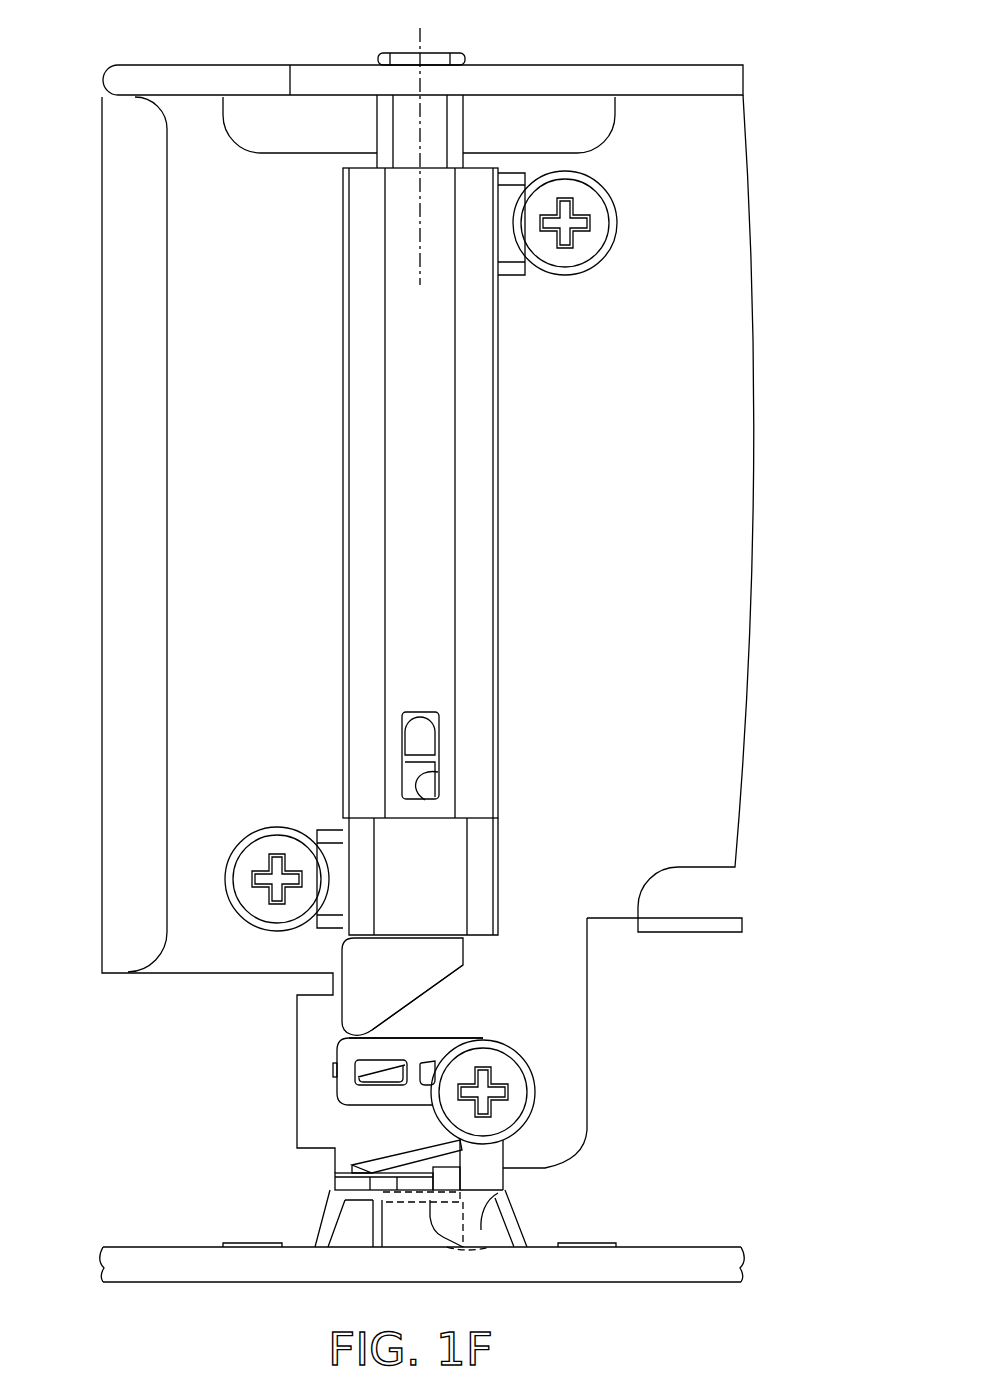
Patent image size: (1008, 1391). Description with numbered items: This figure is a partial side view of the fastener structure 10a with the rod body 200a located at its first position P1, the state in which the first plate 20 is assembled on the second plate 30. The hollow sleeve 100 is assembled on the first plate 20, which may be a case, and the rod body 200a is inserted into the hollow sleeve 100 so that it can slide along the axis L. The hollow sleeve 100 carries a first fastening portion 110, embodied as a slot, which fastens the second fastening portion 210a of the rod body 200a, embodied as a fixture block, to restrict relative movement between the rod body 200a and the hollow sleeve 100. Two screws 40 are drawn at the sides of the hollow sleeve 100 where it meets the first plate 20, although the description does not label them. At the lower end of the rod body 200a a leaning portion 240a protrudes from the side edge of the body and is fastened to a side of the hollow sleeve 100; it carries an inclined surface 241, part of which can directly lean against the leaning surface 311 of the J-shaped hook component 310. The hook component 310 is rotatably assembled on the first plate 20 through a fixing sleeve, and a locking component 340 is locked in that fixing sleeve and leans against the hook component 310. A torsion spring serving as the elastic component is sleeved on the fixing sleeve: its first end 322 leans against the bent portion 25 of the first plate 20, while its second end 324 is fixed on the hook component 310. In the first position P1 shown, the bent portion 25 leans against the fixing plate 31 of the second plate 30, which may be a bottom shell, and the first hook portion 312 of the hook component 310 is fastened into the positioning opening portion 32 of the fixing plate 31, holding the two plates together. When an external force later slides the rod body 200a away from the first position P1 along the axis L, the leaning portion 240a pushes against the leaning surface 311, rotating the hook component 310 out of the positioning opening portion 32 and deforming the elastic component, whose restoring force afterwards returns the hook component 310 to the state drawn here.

The axis L is at (418, 142).
The fastener structure 10a is at (333, 450).
The first plate 20 is at (673, 100).
The bent portion 25 is at (357, 1183).
The second plate 30 is at (692, 1255).
The fixing plate 31 is at (322, 1228).
The positioning opening portion 32 is at (420, 1200).
The screw 40 is at (590, 245).
The hollow sleeve 100 is at (468, 524).
The first fastening portion 110 is at (425, 800).
The rod body 200a is at (395, 123).
The second fastening portion 210a is at (432, 741).
The leaning portion 240a is at (400, 963).
The inclined surface 241 is at (437, 985).
The hook component 310 is at (538, 1077).
The leaning surface 311 is at (418, 1038).
The first hook portion 312 is at (503, 1190).
The first end 322 is at (370, 1162).
The second end 324 is at (333, 1073).
The locking component 340 is at (507, 1112).
The first position P1 is at (830, 1306).